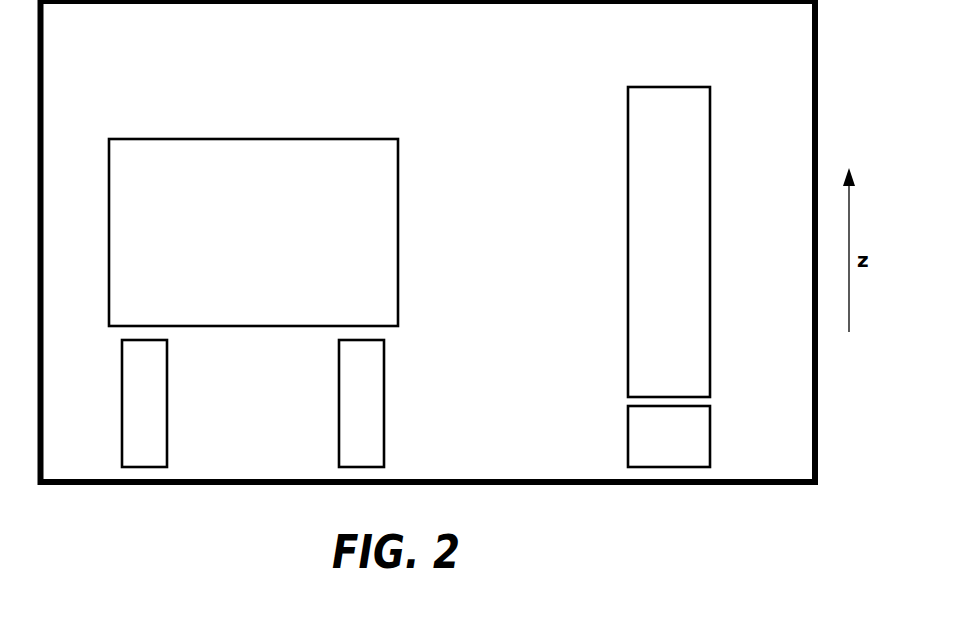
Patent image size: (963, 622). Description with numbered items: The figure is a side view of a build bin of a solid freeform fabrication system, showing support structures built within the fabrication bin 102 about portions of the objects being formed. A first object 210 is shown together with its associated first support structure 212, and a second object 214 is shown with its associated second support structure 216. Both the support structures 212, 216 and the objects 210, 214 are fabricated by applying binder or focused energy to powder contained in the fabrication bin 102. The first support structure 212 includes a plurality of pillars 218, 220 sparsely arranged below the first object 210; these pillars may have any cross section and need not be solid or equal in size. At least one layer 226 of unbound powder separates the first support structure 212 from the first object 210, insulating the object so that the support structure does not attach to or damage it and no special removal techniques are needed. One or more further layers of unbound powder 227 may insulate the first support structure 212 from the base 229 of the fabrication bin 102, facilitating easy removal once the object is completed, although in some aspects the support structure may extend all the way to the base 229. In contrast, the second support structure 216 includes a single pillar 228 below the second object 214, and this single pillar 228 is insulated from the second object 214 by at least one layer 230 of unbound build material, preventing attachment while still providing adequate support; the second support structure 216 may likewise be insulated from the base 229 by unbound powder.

The fabrication bin 102 is at (438, 88).
The first object 210 is at (274, 242).
The second object 214 is at (689, 250).
The single pillar 228 is at (689, 448).
The pillar 218 is at (123, 383).
The pillar 220 is at (385, 388).
The layer of unbound powder 226 is at (348, 333).
The layers of unbound powder 227 is at (348, 474).
The first support structure 212 is at (309, 409).
The base 229 is at (482, 455).
The layer of unbound build material 230 is at (630, 402).
The second support structure 216 is at (598, 453).